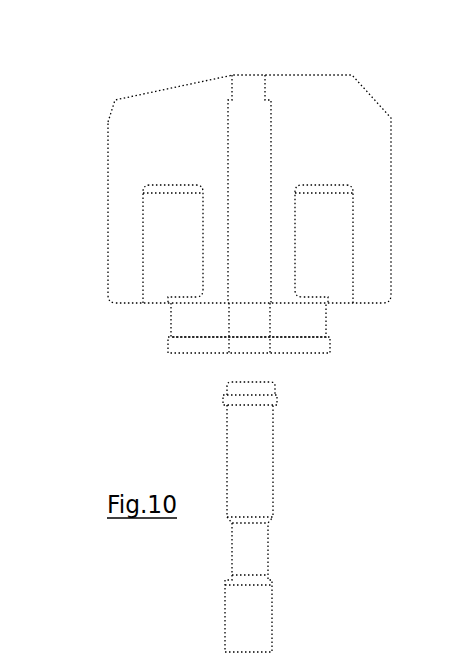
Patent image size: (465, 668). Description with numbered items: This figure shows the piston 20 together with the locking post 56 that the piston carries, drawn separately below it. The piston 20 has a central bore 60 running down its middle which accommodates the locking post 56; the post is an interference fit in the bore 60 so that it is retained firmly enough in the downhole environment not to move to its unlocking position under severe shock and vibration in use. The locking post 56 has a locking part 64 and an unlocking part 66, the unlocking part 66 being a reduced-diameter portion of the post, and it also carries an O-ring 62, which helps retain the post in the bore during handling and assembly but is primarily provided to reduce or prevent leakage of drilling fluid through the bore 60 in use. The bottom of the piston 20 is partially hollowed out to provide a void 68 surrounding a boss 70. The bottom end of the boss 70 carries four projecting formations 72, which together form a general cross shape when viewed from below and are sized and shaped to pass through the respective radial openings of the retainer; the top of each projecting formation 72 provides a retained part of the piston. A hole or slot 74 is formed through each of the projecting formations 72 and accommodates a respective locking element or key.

The piston 20 is at (113, 100).
The central bore 60 is at (270, 118).
The void 68 is at (165, 226).
The boss 70 is at (285, 229).
The hole or slot 74 is at (175, 322).
The projecting formations 72 is at (170, 347).
The locking post 56 is at (295, 592).
The O-ring 62 is at (228, 426).
The unlocking part 66 is at (243, 563).
The locking part 64 is at (242, 631).